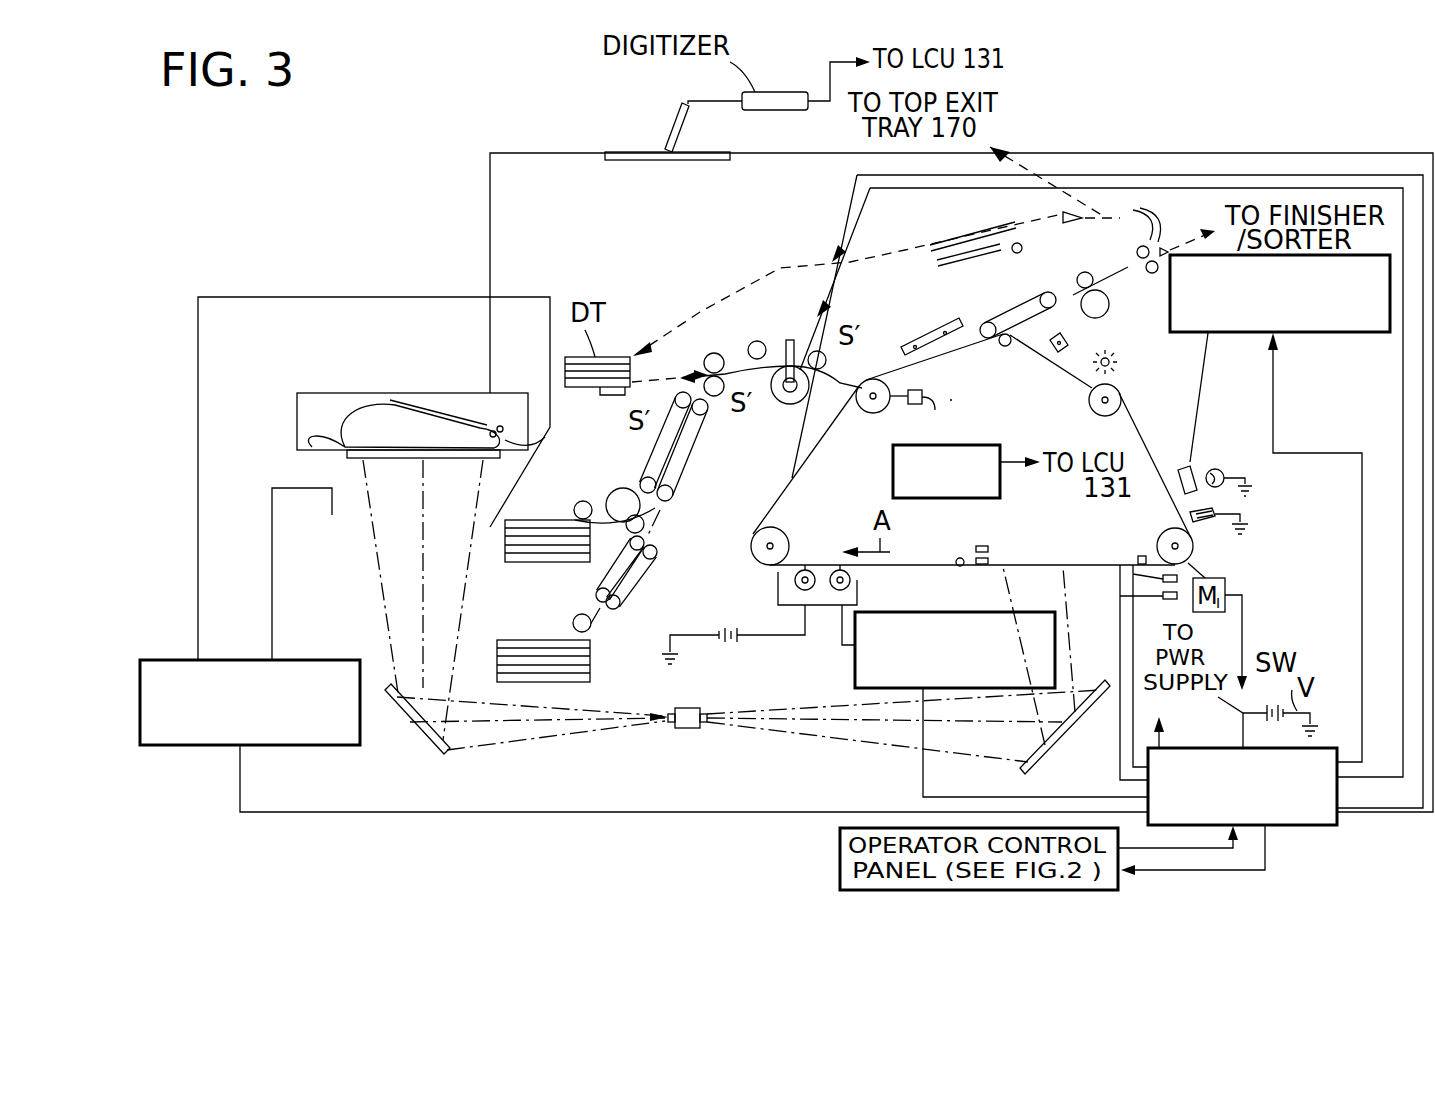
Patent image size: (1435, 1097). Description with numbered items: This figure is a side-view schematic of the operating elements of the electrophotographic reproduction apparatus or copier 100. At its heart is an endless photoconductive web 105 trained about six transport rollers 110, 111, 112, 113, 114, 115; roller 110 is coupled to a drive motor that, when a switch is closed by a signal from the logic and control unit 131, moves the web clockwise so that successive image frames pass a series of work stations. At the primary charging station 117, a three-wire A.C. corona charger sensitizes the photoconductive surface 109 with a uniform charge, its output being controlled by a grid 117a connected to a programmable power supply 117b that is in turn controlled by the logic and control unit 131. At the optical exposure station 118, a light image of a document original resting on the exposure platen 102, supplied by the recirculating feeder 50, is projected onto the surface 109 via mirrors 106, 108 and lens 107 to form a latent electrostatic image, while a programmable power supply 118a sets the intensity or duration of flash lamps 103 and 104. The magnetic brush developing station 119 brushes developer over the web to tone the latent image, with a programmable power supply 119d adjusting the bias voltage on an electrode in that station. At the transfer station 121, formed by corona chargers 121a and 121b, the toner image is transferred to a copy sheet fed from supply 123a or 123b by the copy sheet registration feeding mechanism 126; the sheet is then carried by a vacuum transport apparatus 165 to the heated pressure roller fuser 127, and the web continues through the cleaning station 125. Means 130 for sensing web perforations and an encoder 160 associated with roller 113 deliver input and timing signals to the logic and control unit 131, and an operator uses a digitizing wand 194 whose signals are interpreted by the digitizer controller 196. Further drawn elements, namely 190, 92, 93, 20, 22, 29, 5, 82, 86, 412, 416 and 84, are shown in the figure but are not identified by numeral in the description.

The electrophotographic reproduction apparatus 100 is at (598, 140).
The digitizer tablet 190 is at (640, 148).
The digitizing wand 194 is at (692, 133).
The digitizer controller 196 is at (797, 92).
The recirculating feeder 50 is at (320, 383).
The document feeder 92 is at (450, 400).
The document sensor 93 is at (550, 429).
The exposure platen 102 is at (442, 462).
The flash lamp 103 is at (332, 515).
The flash lamp 104 is at (492, 532).
The mirror 106 is at (415, 755).
The lens 107 is at (688, 730).
The mirror 108 is at (1078, 740).
The programmable power supply 118a is at (305, 748).
The feed rollers 20 is at (750, 345).
The registration roller 22 is at (795, 405).
The registration gate 29 is at (784, 350).
The optical exposure station 118 is at (993, 567).
The belt 5 is at (962, 391).
The transport roller 112 is at (790, 535).
The transport roller 113 is at (865, 415).
The transport roller 114 is at (1005, 348).
The transport roller 115 is at (1088, 406).
The means for sensing web perforations 130 is at (1126, 562).
The encoder 160 is at (918, 414).
The photoconductive web 105 is at (1118, 372).
The cleaning station 125 is at (1120, 355).
The vacuum transport apparatus 165 is at (1012, 318).
The transfer station 121 is at (908, 356).
The corona charger 121a is at (925, 330).
The corona charger 121b is at (950, 340).
The heated pressure roller fuser 127 is at (1103, 288).
The primary charging station 117 is at (1200, 462).
The grid 117a is at (1172, 514).
The programmable power supply 117b is at (1317, 333).
The photoconductive surface 109 is at (1150, 460).
The transport roller 110 is at (1195, 552).
The sensor 82 is at (988, 548).
The sensor 86 is at (990, 560).
The transport roller 111 is at (956, 560).
The magnetic brush developing station 119 is at (775, 595).
The programmable power supply 119d is at (855, 683).
The electrode 412 is at (1118, 580).
The electrode 416 is at (1118, 612).
The power supply 84 is at (975, 445).
The logic and control unit 131 is at (1218, 748).
The copy sheet supply 123a is at (583, 518).
The copy sheet supply 123b is at (548, 640).
The copy sheet registration feeding mechanism 126 is at (612, 490).